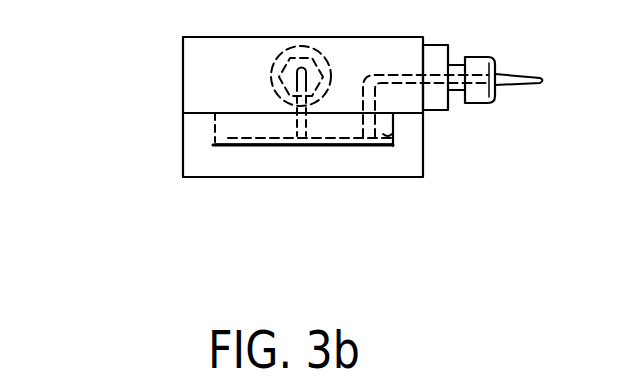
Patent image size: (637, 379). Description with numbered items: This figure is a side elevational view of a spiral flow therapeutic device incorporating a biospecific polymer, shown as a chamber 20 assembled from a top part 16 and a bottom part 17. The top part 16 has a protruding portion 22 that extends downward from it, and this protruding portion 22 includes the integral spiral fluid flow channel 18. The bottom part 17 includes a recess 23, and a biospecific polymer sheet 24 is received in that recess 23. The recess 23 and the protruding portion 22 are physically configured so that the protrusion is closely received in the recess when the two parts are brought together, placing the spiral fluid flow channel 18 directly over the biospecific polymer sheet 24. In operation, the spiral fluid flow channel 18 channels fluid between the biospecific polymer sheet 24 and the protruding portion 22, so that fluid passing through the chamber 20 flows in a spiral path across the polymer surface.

The top part 16 is at (203, 77).
The bottom part 17 is at (197, 158).
The spiral fluid flow channel 18 is at (327, 147).
The chamber 20 is at (436, 131).
The protruding portion 22 is at (395, 135).
The recess 23 is at (210, 137).
The biospecific polymer sheet 24 is at (242, 147).